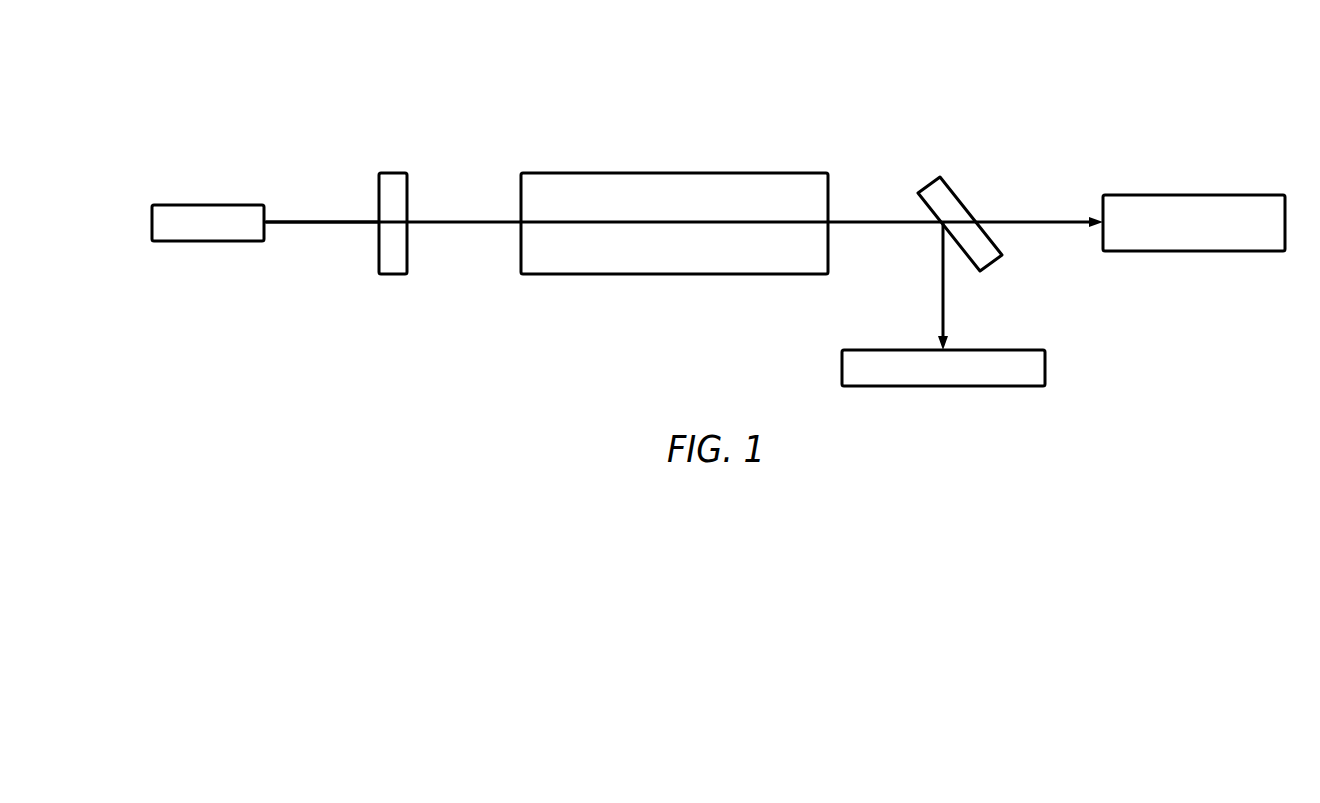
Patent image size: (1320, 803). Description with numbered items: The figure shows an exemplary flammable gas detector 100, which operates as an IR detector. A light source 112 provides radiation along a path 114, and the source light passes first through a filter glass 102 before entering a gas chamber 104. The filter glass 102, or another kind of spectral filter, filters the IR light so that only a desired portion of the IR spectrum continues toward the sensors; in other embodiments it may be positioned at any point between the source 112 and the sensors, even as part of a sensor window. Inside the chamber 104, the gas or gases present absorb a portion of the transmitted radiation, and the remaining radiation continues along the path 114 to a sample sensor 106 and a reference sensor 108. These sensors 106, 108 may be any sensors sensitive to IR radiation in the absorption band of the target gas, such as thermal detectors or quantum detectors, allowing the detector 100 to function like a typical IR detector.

The flammable gas detector 100 is at (292, 28).
The filter glass 102 is at (407, 245).
The gas chamber 104 is at (755, 173).
The sample sensor 106 is at (1045, 365).
The reference sensor 108 is at (1197, 195).
The light source 112 is at (210, 205).
The path 114 is at (300, 222).